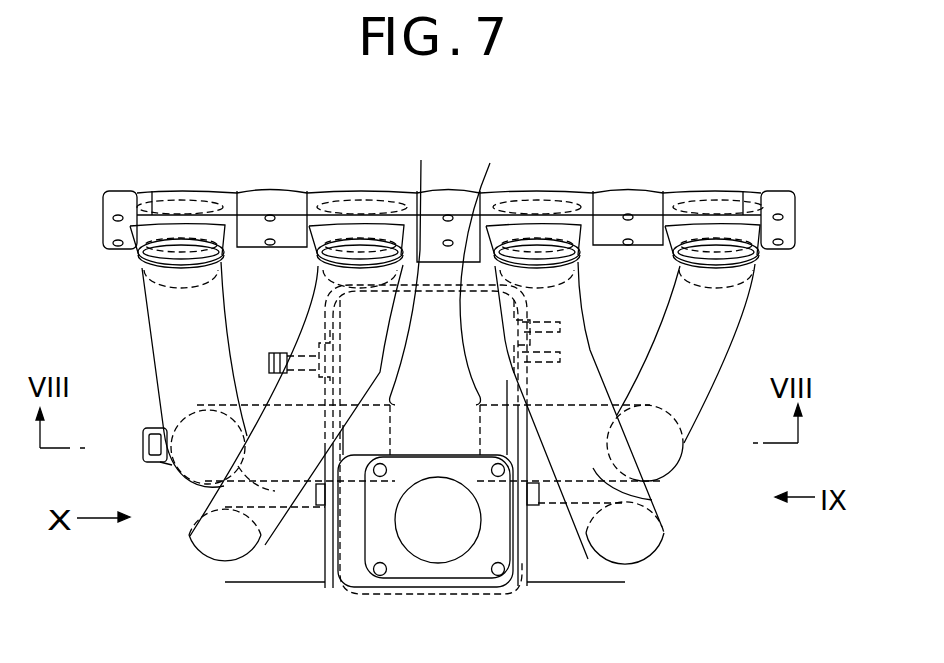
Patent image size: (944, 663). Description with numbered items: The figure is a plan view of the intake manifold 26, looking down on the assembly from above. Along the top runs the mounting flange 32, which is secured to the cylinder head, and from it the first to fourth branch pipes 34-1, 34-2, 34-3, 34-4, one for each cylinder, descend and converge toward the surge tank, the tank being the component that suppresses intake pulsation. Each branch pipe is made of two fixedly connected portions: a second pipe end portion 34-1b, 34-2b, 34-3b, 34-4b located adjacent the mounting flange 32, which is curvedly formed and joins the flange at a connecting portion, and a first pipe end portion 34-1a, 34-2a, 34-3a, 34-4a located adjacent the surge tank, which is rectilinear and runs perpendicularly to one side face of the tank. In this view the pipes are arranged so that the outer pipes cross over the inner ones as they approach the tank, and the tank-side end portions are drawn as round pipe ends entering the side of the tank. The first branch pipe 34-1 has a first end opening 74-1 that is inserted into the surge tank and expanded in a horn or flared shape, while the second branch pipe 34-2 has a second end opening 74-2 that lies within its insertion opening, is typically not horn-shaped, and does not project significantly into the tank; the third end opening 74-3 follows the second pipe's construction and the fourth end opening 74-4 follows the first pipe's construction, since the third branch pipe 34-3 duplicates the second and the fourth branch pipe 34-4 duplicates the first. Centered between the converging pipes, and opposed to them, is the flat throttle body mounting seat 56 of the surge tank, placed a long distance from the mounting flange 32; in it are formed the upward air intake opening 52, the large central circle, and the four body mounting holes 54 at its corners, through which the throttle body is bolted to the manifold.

The intake manifold 26 is at (620, 128).
The mounting flange 32 is at (765, 191).
The first branch pipe 34-1 is at (753, 310).
The second branch pipe 34-2 is at (665, 552).
The third branch pipe 34-3 is at (187, 545).
The fourth branch pipe 34-4 is at (141, 313).
The first pipe end portion 34-1a is at (655, 503).
The first pipe end portion 34-2a is at (587, 572).
The first pipe end portion 34-3a is at (270, 578).
The first pipe end portion 34-4a is at (198, 489).
The second pipe end portion 34-1b is at (730, 334).
The second pipe end portion 34-2b is at (613, 308).
The second pipe end portion 34-3b is at (314, 328).
The second pipe end portion 34-4b is at (170, 348).
The air intake opening 52 is at (423, 537).
The body mounting holes 54 is at (498, 576).
The throttle body mounting seat 56 is at (447, 577).
The first end opening 74-1 is at (486, 178).
The second end opening 74-2 is at (528, 560).
The third end opening 74-3 is at (328, 578).
The fourth end opening 74-4 is at (416, 178).